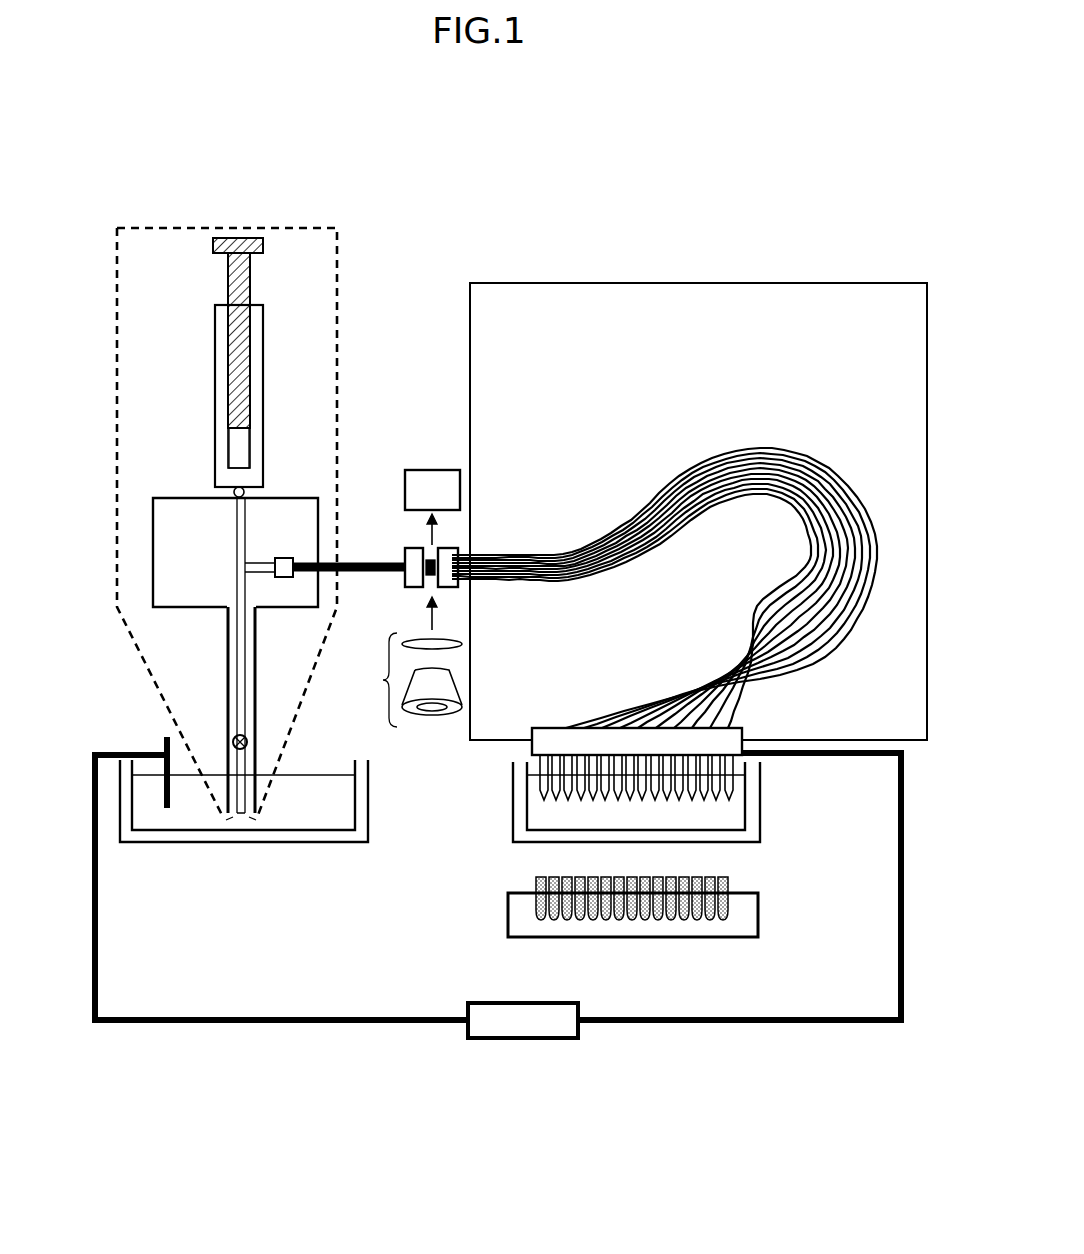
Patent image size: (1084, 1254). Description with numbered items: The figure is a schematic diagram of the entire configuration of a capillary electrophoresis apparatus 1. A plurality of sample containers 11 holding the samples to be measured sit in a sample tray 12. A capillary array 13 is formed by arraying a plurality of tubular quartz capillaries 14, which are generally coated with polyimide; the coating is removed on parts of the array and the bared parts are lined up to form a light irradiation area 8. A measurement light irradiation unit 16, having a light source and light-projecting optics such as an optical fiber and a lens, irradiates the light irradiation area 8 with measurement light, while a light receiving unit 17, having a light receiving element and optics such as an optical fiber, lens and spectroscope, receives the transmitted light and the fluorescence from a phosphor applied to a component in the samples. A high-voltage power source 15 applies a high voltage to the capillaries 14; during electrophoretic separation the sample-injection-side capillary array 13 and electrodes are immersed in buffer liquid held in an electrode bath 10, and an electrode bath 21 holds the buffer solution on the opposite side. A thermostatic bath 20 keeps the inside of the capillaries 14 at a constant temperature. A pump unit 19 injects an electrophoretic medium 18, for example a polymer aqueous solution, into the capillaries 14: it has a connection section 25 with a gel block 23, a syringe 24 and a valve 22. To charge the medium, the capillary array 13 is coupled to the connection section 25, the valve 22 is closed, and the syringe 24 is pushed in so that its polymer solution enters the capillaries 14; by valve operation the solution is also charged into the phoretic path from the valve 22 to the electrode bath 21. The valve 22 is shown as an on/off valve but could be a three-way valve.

The capillary electrophoresis apparatus 1 is at (853, 178).
The light irradiation area 8 is at (440, 572).
The electrode bath 10 is at (752, 793).
The sample containers 11 is at (730, 885).
The sample tray 12 is at (745, 920).
The capillary array 13 is at (664, 587).
The capillaries 14 is at (738, 505).
The high-voltage power source 15 is at (525, 1032).
The measurement light irradiation unit 16 is at (408, 662).
The light receiving unit 17 is at (427, 470).
The electrophoretic medium 18 is at (238, 460).
The pump unit 19 is at (265, 228).
The thermostatic bath 20 is at (740, 298).
The electrode bath 21 is at (165, 843).
The valve 22 is at (248, 742).
The gel block 23 is at (281, 508).
The syringe 24 is at (217, 383).
The connection section 25 is at (291, 578).